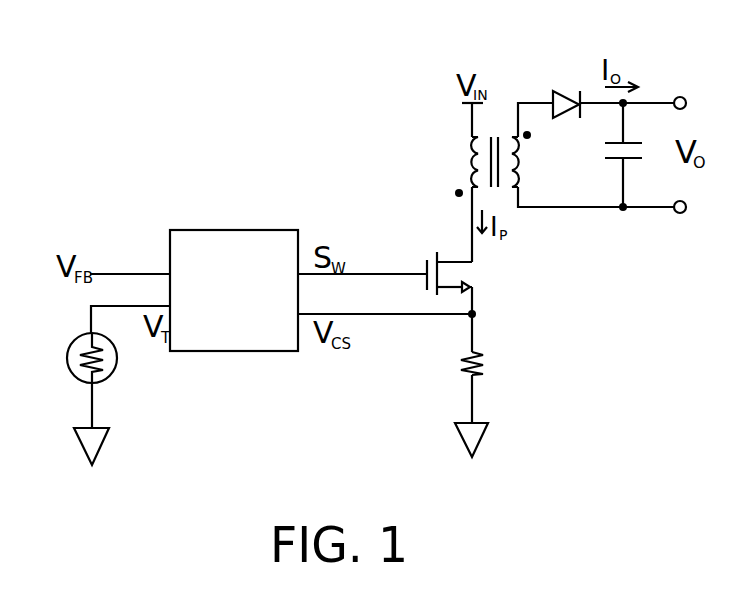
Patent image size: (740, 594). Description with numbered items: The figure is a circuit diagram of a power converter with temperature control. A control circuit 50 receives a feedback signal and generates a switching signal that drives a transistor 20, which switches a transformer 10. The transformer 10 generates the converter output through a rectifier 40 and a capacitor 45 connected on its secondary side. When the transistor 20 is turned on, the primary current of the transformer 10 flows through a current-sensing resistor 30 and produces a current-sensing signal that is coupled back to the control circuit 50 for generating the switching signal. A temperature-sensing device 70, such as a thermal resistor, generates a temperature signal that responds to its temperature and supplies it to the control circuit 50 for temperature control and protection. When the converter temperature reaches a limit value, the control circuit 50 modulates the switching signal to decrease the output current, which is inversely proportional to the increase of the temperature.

The transformer 10 is at (490, 130).
The transistor 20 is at (465, 285).
The current-sensing resistor 30 is at (463, 353).
The rectifier 40 is at (565, 90).
The capacitor 45 is at (605, 158).
The control circuit 50 is at (235, 232).
The temperature-sensing device 70 is at (65, 362).